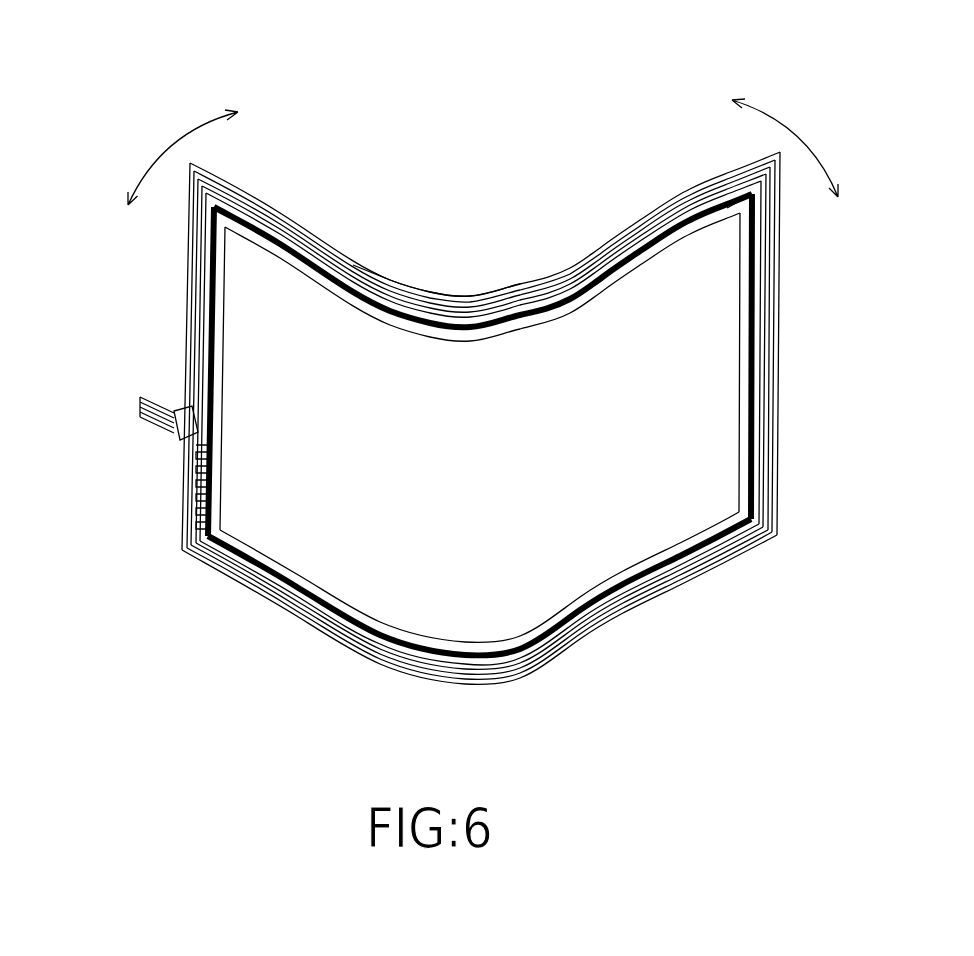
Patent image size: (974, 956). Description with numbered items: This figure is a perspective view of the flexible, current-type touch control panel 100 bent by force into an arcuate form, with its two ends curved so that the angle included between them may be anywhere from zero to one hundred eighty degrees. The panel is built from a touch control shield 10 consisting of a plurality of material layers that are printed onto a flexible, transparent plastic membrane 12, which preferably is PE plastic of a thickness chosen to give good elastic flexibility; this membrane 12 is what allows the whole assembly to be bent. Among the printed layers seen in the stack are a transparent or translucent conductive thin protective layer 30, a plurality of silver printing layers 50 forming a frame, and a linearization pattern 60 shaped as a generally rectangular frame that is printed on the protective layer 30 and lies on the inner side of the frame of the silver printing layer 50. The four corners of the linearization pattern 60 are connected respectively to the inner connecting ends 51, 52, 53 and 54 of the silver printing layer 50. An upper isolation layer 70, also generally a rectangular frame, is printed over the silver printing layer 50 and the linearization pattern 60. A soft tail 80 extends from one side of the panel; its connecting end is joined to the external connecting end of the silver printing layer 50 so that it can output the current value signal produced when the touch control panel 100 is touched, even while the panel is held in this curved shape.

The touch control panel 100 is at (512, 222).
The touch control shield 10 is at (567, 593).
The flexible transparent plastic membrane 12 is at (401, 285).
The protective layer 30 is at (298, 470).
The silver printing layer 50 is at (380, 655).
The inner connecting end 51 is at (750, 196).
The inner connecting end 52 is at (217, 210).
The inner connecting end 53 is at (209, 535).
The inner connecting end 54 is at (749, 521).
The linearization pattern 60 is at (762, 355).
The upper isolation layer 70 is at (770, 281).
The soft tail 80 is at (140, 397).